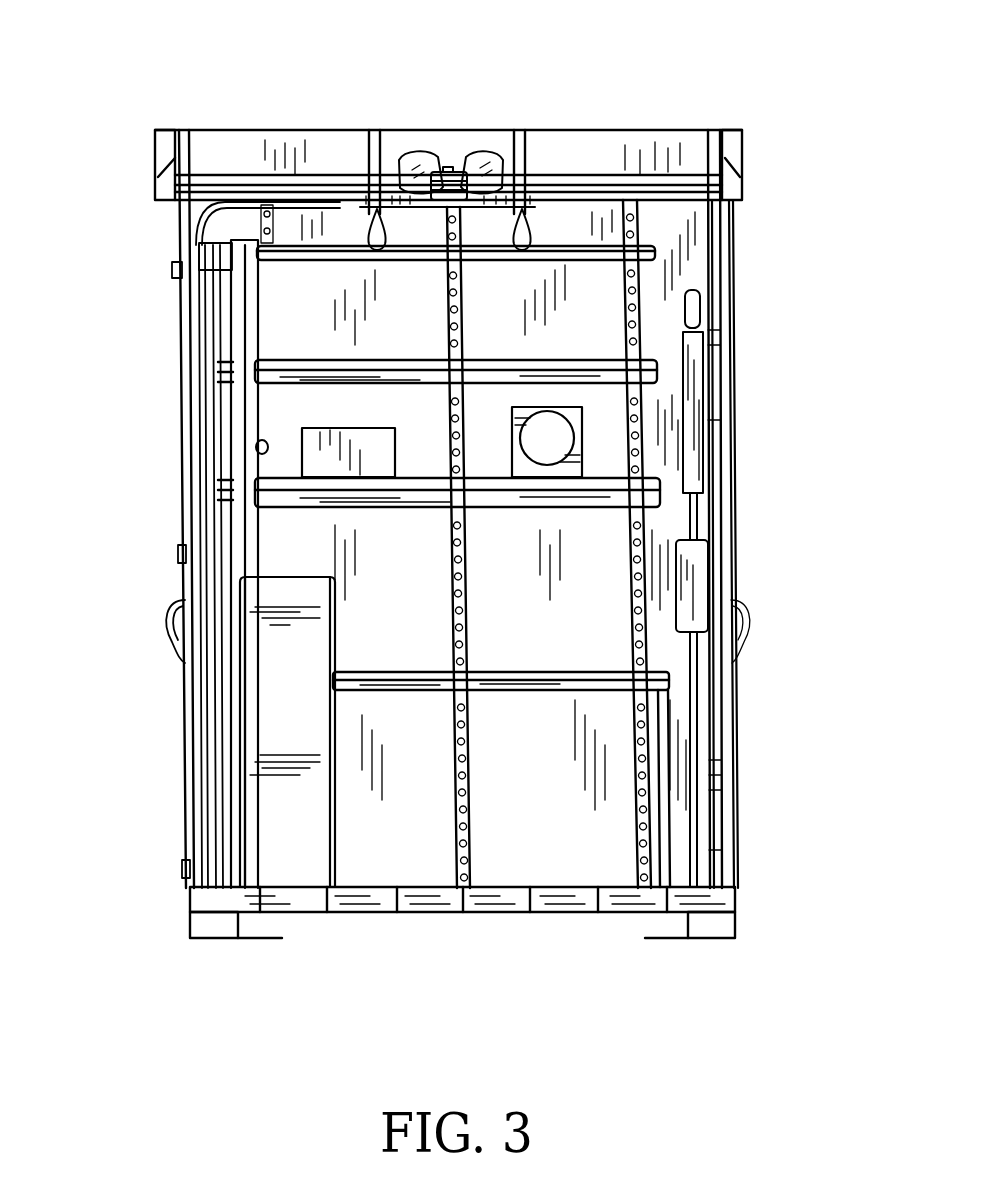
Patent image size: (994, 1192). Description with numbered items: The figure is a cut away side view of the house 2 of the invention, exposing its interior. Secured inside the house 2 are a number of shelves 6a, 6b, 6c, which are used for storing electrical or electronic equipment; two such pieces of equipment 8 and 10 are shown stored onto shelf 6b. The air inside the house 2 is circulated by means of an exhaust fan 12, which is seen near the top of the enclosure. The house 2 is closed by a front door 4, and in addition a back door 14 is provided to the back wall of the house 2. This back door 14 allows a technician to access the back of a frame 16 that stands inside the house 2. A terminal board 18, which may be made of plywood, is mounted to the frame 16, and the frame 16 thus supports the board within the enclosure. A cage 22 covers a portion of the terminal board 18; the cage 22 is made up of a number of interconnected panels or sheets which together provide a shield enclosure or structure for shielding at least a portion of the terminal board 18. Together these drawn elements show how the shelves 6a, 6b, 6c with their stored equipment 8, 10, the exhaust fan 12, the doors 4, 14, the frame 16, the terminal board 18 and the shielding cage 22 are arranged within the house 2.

The house 2 is at (754, 94).
The front door 4 is at (735, 782).
The shelf 6a is at (288, 388).
The shelf 6b is at (543, 497).
The shelf 6c is at (510, 690).
The electrical or electronic equipment 8 is at (370, 428).
The electrical or electronic equipment 10 is at (584, 410).
The exhaust fan 12 is at (398, 130).
The back door 14 is at (190, 722).
The frame 16 is at (240, 306).
The terminal board 18 is at (257, 448).
The cage 22 is at (262, 805).